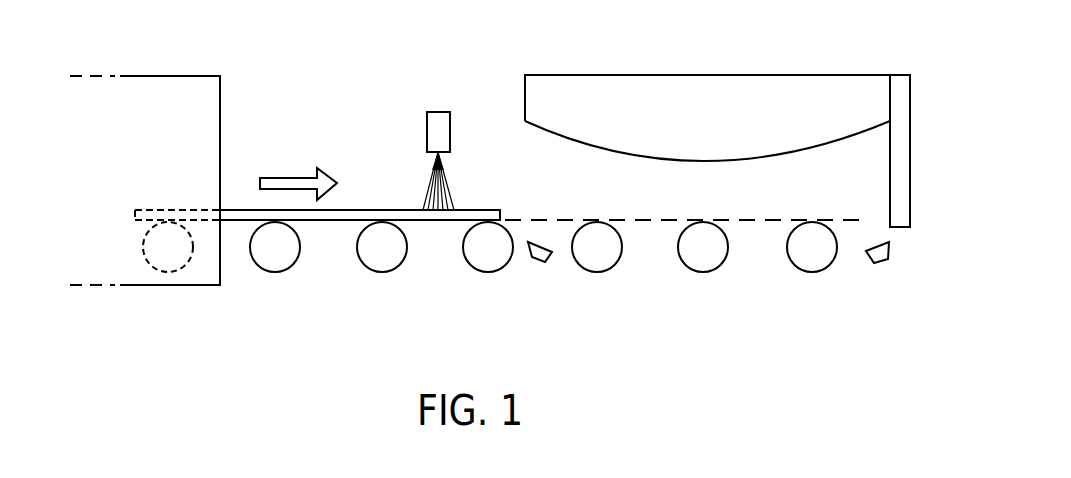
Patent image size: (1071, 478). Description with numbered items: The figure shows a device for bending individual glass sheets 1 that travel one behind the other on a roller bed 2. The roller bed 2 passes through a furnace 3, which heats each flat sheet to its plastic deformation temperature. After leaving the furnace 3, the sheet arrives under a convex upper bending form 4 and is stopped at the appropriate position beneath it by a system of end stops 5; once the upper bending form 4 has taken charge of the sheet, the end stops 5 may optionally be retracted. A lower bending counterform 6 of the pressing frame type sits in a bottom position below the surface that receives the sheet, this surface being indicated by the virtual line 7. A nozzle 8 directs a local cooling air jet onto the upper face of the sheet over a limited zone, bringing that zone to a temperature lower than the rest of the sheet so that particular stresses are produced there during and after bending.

The glass sheet 1 is at (240, 210).
The roller bed 2 is at (376, 285).
The furnace 3 is at (163, 120).
The convex upper bending form 4 is at (585, 98).
The end stops 5 is at (902, 177).
The lower bending counterform 6 is at (537, 258).
The virtual line 7 is at (778, 206).
The nozzle 8 is at (427, 120).